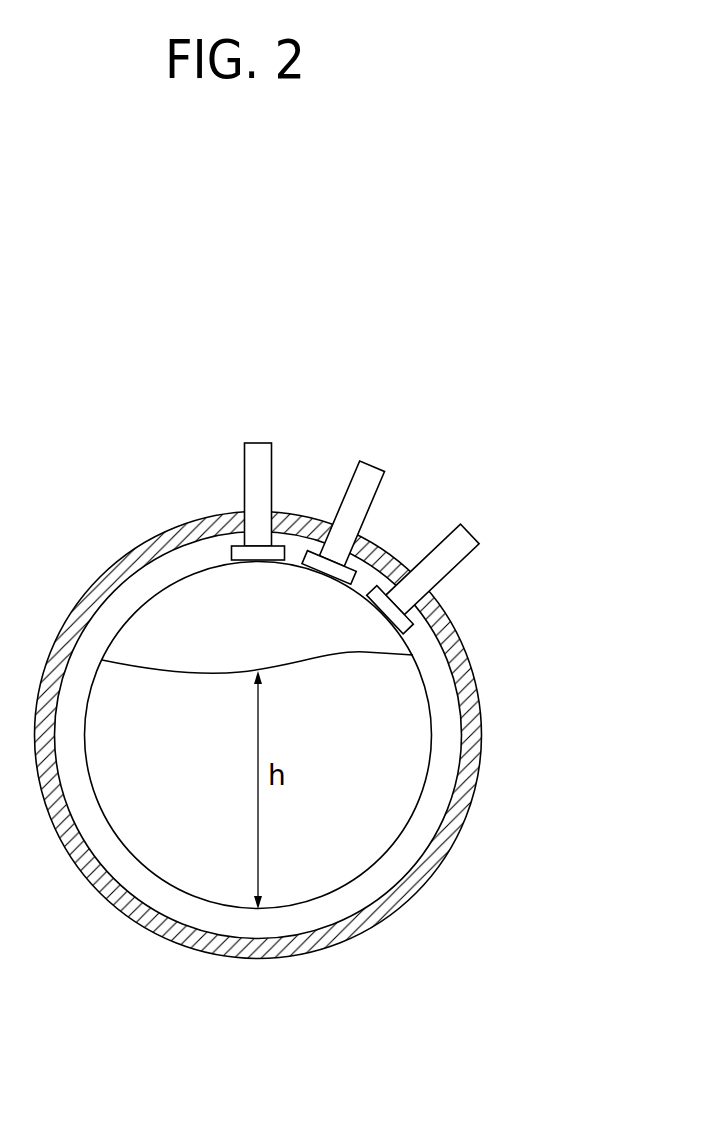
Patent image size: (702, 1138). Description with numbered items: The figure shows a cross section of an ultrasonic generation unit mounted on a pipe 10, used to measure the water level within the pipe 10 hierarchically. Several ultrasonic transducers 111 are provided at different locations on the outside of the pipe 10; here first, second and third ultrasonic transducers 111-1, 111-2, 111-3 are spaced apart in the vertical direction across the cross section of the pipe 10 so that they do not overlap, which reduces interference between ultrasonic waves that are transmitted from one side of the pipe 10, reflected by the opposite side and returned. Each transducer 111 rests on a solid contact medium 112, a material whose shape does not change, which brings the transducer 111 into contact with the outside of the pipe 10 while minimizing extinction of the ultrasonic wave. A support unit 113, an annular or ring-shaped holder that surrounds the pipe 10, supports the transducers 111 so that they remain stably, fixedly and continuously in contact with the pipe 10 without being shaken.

The pipe 10 is at (423, 672).
The ultrasonic transducer 111 is at (370, 479).
The first ultrasonic transducer 111-1 is at (257, 443).
The second ultrasonic transducer 111-2 is at (373, 465).
The third ultrasonic transducer 111-3 is at (454, 500).
The solid contact medium 112 is at (377, 598).
The support unit 113 is at (482, 732).